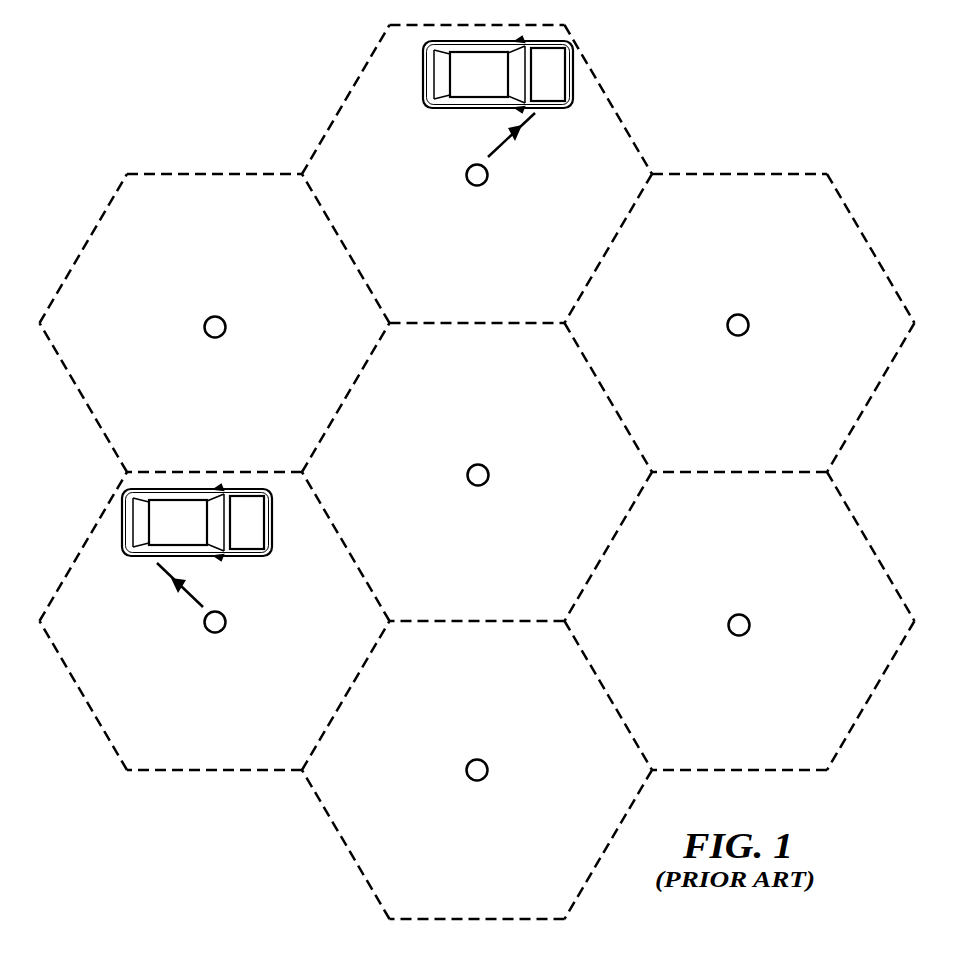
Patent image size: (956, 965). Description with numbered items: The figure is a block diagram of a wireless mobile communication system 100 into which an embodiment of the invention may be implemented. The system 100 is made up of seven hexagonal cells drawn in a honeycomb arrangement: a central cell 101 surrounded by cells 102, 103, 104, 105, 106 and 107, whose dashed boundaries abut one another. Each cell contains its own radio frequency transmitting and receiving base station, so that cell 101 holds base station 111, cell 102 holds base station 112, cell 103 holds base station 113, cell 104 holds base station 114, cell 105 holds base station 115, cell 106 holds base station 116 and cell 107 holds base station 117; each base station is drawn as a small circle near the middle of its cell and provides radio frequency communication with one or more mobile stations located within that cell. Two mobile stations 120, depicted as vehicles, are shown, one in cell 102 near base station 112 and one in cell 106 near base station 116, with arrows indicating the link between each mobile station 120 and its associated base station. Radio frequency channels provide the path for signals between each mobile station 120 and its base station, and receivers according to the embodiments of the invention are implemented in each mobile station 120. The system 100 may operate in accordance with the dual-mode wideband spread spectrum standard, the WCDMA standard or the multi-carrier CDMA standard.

The wireless communication system 100 is at (226, 90).
The cell 101 is at (498, 568).
The cell 102 is at (498, 270).
The cell 103 is at (759, 422).
The cell 104 is at (759, 719).
The cell 105 is at (498, 867).
The cell 106 is at (236, 719).
The cell 107 is at (236, 422).
The base station 111 is at (467, 477).
The base station 112 is at (487, 180).
The base station 113 is at (748, 321).
The base station 114 is at (749, 627).
The base station 115 is at (466, 771).
The base station 116 is at (204, 625).
The base station 117 is at (205, 324).
The mobile station 120 is at (463, 108).